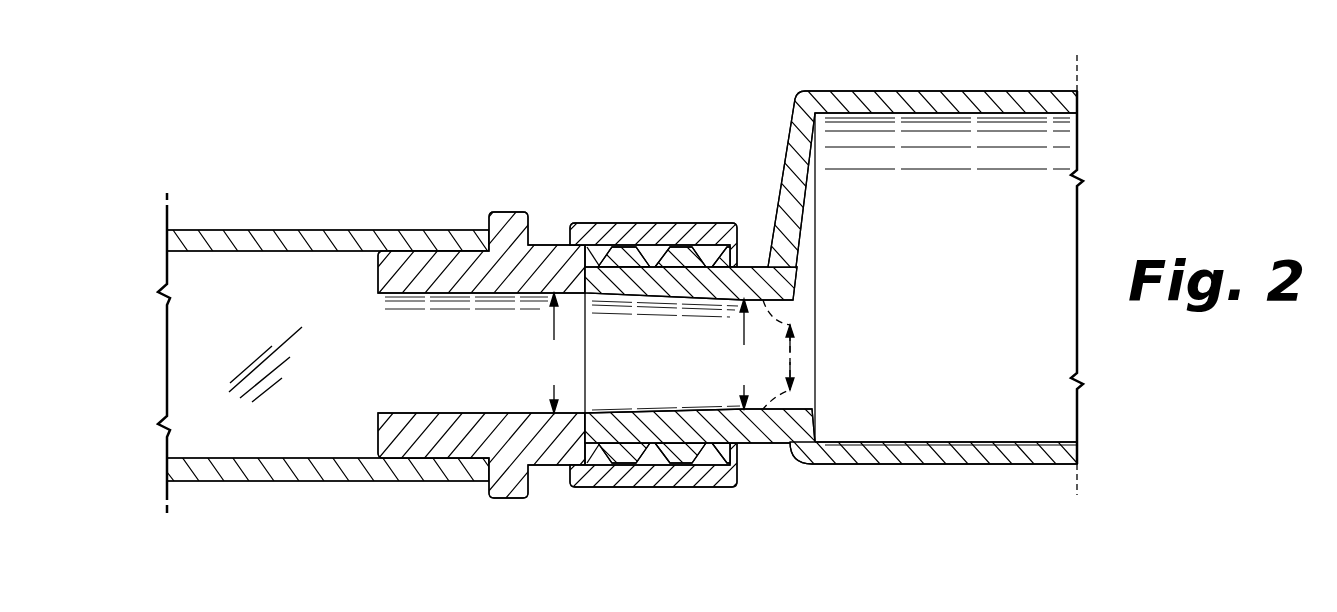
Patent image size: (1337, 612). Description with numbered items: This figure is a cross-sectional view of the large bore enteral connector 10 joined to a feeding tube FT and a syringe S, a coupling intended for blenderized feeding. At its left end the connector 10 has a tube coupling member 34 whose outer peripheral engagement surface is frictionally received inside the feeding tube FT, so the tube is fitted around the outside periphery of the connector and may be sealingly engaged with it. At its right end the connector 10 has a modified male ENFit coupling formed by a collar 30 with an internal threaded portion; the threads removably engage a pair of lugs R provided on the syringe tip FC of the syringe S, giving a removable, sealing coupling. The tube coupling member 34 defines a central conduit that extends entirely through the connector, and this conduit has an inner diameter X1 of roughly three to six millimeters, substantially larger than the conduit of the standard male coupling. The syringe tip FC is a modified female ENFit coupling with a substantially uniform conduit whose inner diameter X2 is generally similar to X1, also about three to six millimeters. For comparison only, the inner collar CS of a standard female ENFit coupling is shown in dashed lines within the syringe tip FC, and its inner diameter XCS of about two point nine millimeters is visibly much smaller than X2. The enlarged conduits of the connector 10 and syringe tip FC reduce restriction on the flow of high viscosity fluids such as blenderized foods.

The large bore enteral connector 10 is at (615, 165).
The collar 30 is at (710, 485).
The tube coupling member 34 is at (422, 275).
The lugs R is at (632, 455).
The syringe S is at (937, 95).
The inner collar CS is at (798, 312).
The feeding tube FT is at (254, 238).
The syringe tip FC is at (770, 478).
The inner diameter of the connector conduit X1 is at (559, 353).
The inner diameter of the syringe tip X2 is at (749, 354).
The inner diameter of the inner collar XCS is at (792, 356).